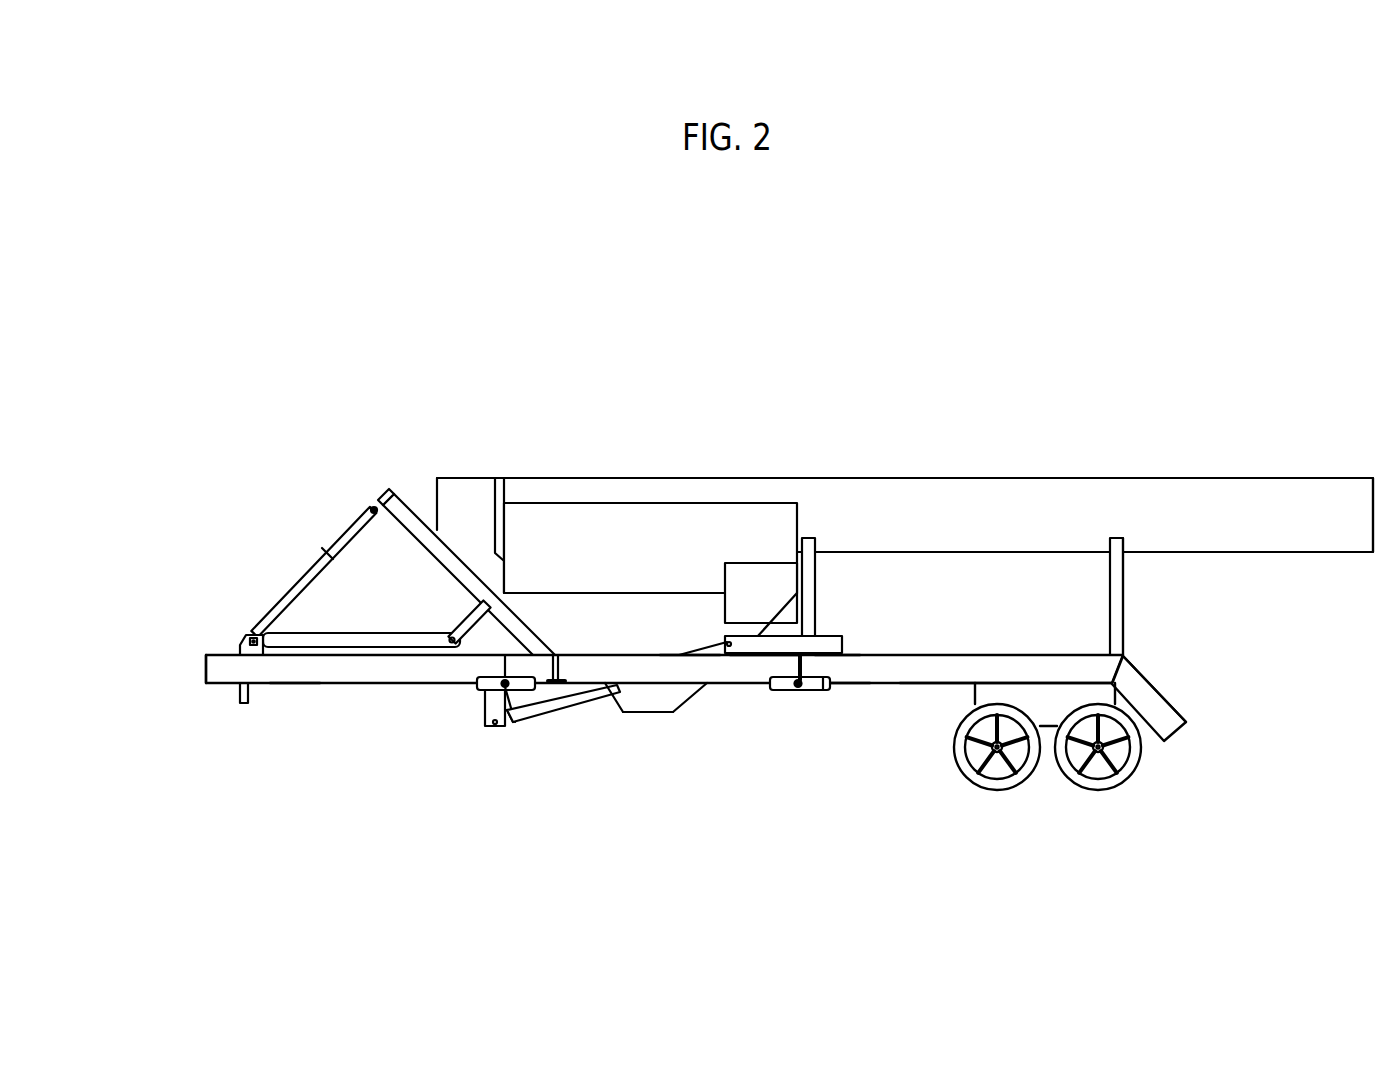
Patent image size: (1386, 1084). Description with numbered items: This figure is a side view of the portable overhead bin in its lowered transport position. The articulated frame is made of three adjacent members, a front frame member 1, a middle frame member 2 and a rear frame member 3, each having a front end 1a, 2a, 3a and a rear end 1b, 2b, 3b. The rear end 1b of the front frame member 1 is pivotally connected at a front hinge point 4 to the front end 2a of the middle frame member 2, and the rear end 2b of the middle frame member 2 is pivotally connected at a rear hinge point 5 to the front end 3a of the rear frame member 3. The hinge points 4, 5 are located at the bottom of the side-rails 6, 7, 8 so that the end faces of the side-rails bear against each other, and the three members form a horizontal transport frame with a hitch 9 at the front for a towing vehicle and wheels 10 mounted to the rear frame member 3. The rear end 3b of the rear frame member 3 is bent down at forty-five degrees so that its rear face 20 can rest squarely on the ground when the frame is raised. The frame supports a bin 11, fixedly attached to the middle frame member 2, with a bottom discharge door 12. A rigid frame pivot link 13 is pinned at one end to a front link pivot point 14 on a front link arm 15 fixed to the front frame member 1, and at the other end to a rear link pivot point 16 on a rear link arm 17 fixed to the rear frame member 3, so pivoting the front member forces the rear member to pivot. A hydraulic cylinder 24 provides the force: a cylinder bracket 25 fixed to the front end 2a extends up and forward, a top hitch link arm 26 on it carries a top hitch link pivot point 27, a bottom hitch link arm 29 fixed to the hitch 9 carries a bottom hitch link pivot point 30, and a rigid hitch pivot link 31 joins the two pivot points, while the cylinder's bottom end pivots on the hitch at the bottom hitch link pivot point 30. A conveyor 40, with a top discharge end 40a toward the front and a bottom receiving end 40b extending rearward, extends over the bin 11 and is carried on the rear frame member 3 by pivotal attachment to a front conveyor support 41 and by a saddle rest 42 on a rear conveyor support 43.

The front frame member 1 is at (664, 728).
The front end of front frame member 1a is at (166, 717).
The rear end of front frame member 1b is at (405, 764).
The middle frame member 2 is at (628, 772).
The front end of middle frame member 2a is at (576, 620).
The rear end of middle frame member 2b is at (729, 785).
The rear frame member 3 is at (987, 746).
The front end of rear frame member 3a is at (808, 755).
The rear end of rear frame member 3b is at (1223, 684).
The front hinge point 4 is at (529, 719).
The rear hinge point 5 is at (792, 726).
The side-rails of front frame member 6 is at (295, 739).
The side-rails of middle frame member 7 is at (649, 777).
The side-rails of rear frame member 8 is at (826, 784).
The hitch 9 is at (257, 734).
The wheels 10 is at (1047, 798).
The bin 11 is at (650, 468).
The bottom discharge door 12 is at (592, 808).
The frame pivot link 13 is at (547, 782).
The front link pivot point 14 is at (479, 750).
The front link arm 15 is at (465, 735).
The rear link pivot point 16 is at (732, 626).
The rear link arm 17 is at (826, 600).
The rear face of rear frame member 20 is at (1217, 740).
The hydraulic cylinder 24 is at (264, 572).
The cylinder bracket 25 is at (420, 546).
The top hitch link arm 26 is at (419, 603).
The top hitch link pivot point 27 is at (397, 615).
The bottom hitch link arm 29 is at (176, 642).
The bottom hitch link pivot point 30 is at (173, 616).
The hitch pivot link 31 is at (302, 610).
The conveyor 40 is at (905, 413).
The top discharge end of conveyor 40a is at (528, 428).
The bottom receiving end of conveyor 40b is at (1241, 428).
The front conveyor support 41 is at (857, 596).
The saddle rest 42 is at (1066, 596).
The rear conveyor support 43 is at (1181, 596).